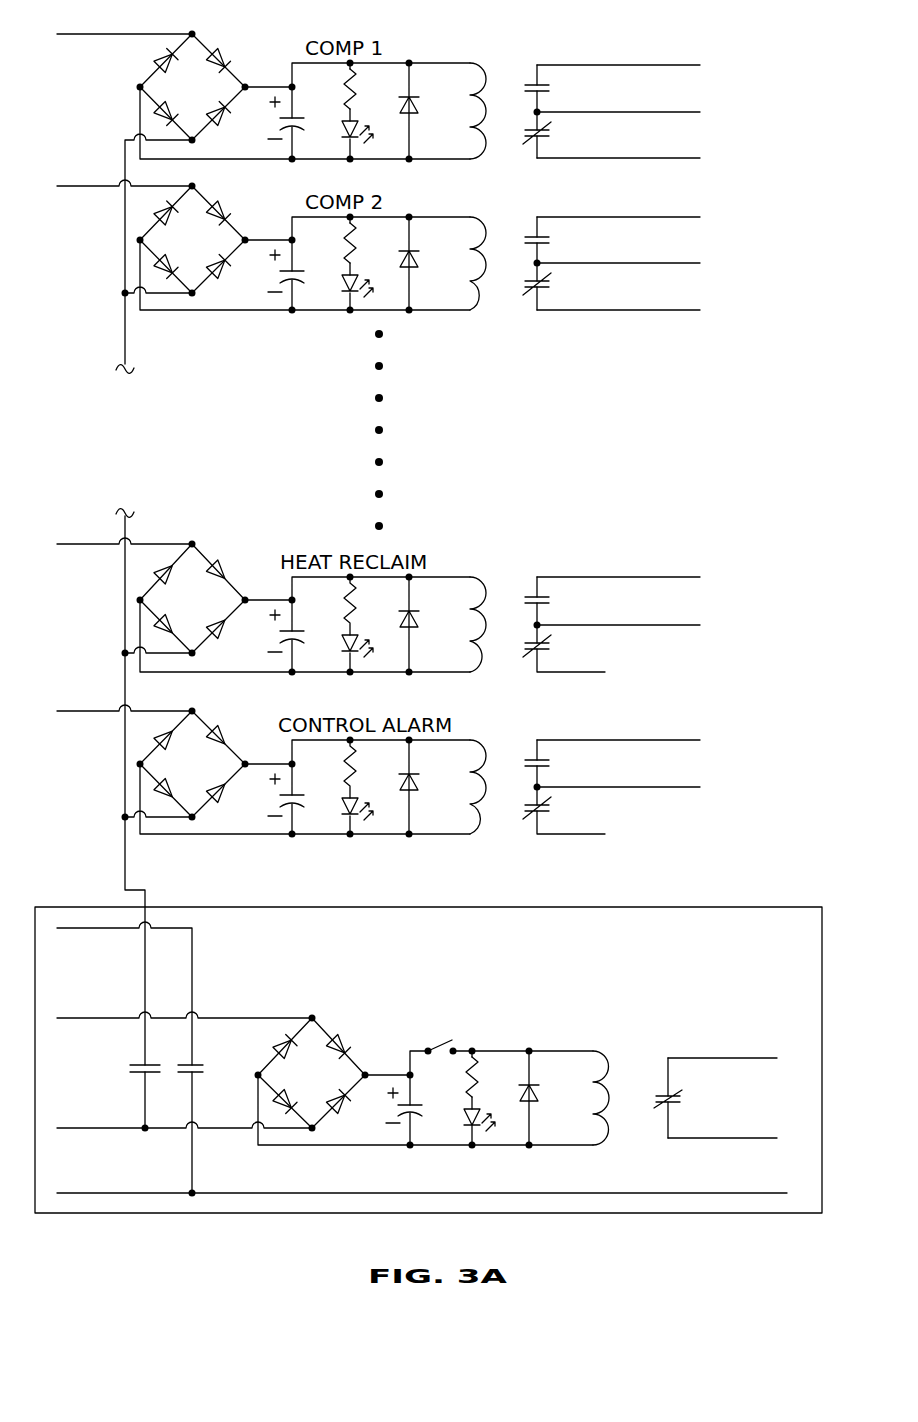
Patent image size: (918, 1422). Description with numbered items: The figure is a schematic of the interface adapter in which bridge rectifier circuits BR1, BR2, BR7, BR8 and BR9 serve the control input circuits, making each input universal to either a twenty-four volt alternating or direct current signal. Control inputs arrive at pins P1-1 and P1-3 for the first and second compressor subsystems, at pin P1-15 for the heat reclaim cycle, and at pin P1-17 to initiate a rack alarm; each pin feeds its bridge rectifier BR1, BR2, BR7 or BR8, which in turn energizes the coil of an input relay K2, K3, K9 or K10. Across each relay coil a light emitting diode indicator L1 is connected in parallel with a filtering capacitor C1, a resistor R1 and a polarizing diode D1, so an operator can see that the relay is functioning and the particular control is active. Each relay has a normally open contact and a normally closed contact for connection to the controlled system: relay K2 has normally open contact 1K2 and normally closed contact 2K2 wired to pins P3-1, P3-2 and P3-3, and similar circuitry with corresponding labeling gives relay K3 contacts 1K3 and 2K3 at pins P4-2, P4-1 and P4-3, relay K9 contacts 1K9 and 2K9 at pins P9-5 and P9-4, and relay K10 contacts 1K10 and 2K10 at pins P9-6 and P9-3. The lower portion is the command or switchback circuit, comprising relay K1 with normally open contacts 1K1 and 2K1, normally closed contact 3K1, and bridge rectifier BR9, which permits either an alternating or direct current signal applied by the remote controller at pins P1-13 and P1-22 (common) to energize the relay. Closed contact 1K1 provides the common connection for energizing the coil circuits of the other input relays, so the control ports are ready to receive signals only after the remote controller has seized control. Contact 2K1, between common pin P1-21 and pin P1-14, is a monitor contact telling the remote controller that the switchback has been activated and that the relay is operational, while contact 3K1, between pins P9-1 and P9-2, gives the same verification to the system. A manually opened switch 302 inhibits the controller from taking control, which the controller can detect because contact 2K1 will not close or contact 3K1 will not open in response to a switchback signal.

The control input pin P1-1 is at (114, 46).
The control input pin P1-3 is at (114, 198).
The heat reclaim input pin P1-15 is at (114, 556).
The rack alarm input pin P1-17 is at (114, 723).
The monitor pin P1-14 is at (114, 940).
The switchback input pin P1-13 is at (114, 1030).
The common input pin P1-22 is at (114, 1140).
The common pin P1-21 is at (114, 1205).
The bridge rectifier BR1 is at (146, 76).
The bridge rectifier BR2 is at (146, 228).
The bridge rectifier BR7 is at (146, 586).
The bridge rectifier BR8 is at (146, 753).
The bridge rectifier BR9 is at (264, 1066).
The filtering capacitor C1 is at (280, 119).
The resistor R1 is at (350, 91).
The light emitting diode indicator L1 is at (342, 127).
The polarizing diode D1 is at (414, 108).
The input relay K2 is at (479, 97).
The input relay K3 is at (479, 250).
The input relay K9 is at (485, 611).
The input relay K10 is at (492, 773).
The switchback relay K1 is at (608, 1087).
The normally open contact 1K2 is at (557, 87).
The normally closed contact 2K2 is at (556, 135).
The normally open contact 1K3 is at (557, 239).
The normally closed contact 2K3 is at (556, 286).
The normally open contact 1K9 is at (557, 599).
The normally closed contact 2K9 is at (556, 648).
The normally open contact 1K10 is at (563, 762).
The normally closed contact 2K10 is at (562, 810).
The normally open contact 1K1 is at (127, 1072).
The normally open monitor contact 2K1 is at (211, 1072).
The normally closed monitor contact 3K1 is at (688, 1102).
The output pin P3-2 is at (633, 54).
The output pin P3-1 is at (633, 101).
The output pin P3-3 is at (633, 147).
The connector pin P4-2 is at (633, 206).
The connector pin P4-1 is at (633, 252).
The connector pin P4-3 is at (633, 299).
The connector pin P9-5 is at (633, 566).
The connector pin P9-4 is at (633, 614).
The connector pin P9-6 is at (633, 729).
The connector pin P9-3 is at (633, 776).
The monitor pin P9-1 is at (761, 1069).
The monitor pin P9-2 is at (753, 1127).
The switch 302 is at (482, 1033).